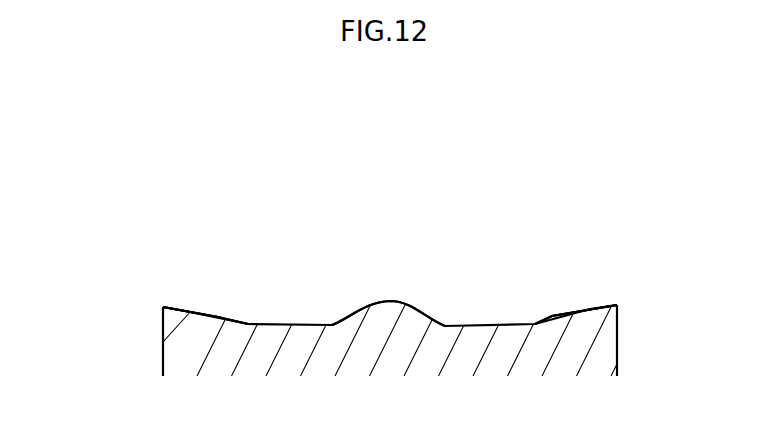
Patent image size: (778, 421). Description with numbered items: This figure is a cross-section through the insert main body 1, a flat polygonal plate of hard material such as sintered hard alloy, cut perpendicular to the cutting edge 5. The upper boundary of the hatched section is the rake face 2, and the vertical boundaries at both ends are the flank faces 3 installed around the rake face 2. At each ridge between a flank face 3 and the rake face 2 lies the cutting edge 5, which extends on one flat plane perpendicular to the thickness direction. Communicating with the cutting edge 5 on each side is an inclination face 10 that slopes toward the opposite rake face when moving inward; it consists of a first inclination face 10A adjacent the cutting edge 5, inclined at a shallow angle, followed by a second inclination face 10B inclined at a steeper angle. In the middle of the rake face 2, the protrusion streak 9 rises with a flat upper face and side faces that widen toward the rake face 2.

The insert main body 1 is at (320, 277).
The rake face 2 is at (485, 303).
The flank face 3 is at (161, 347).
The cutting edge 5 is at (163, 307).
The protrusion streak 9 is at (418, 306).
The inclination face 10 is at (198, 189).
The first inclination face 10A is at (177, 306).
The second inclination face 10B is at (233, 315).